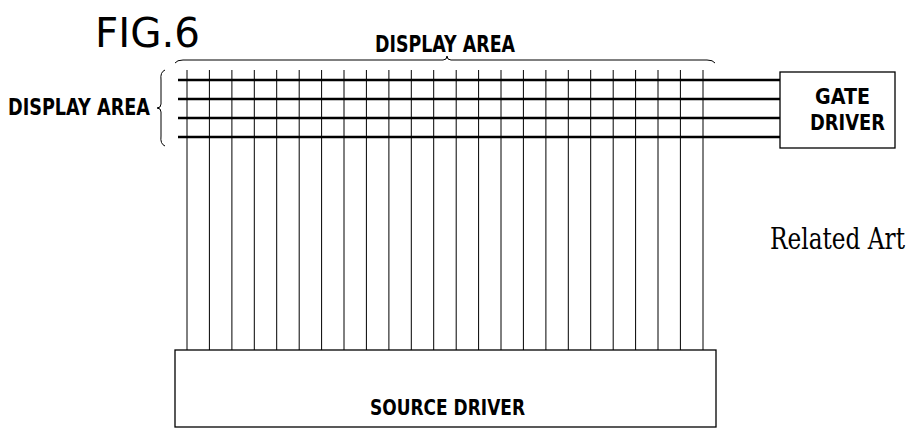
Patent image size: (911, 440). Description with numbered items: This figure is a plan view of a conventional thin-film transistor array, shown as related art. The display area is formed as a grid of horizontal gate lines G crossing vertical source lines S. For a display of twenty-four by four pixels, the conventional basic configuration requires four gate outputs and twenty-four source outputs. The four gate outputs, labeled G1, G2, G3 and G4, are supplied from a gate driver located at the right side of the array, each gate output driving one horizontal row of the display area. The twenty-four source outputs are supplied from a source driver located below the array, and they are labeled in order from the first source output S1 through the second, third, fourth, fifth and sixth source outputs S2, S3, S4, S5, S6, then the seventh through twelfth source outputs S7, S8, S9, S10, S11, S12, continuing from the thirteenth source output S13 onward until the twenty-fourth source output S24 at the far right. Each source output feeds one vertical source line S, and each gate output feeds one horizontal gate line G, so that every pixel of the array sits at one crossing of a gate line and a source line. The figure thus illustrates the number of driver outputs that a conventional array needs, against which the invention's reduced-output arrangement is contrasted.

The gate line G is at (746, 74).
The source line S is at (182, 233).
The first gate output G1 is at (490, 80).
The second gate output G2 is at (490, 99).
The third gate output G3 is at (490, 118).
The fourth gate output G4 is at (490, 137).
The first source output S1 is at (190, 220).
The second source output S2 is at (211, 229).
The third source output S3 is at (234, 220).
The fourth source output S4 is at (257, 229).
The fifth source output S5 is at (279, 220).
The sixth source output S6 is at (301, 229).
The seventh source output S7 is at (324, 220).
The eighth source output S8 is at (346, 229).
The ninth source output S9 is at (370, 220).
The tenth source output S10 is at (396, 229).
The eleventh source output S11 is at (416, 220).
The twelfth source output S12 is at (439, 229).
The thirteenth source output S13 is at (469, 220).
The twenty-fourth source output S24 is at (698, 220).